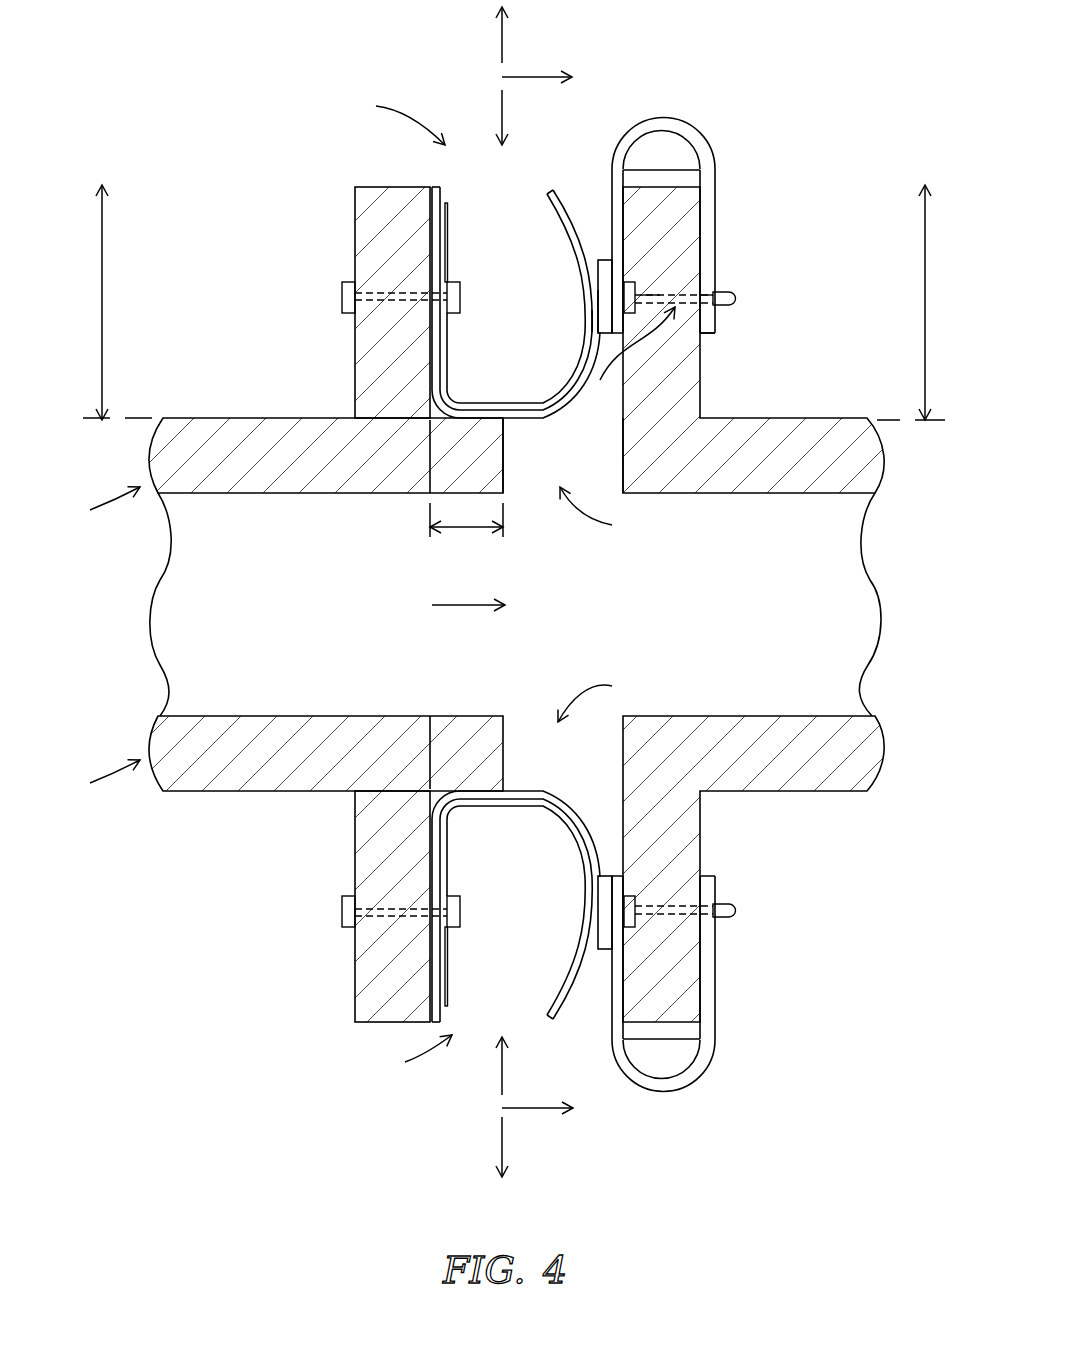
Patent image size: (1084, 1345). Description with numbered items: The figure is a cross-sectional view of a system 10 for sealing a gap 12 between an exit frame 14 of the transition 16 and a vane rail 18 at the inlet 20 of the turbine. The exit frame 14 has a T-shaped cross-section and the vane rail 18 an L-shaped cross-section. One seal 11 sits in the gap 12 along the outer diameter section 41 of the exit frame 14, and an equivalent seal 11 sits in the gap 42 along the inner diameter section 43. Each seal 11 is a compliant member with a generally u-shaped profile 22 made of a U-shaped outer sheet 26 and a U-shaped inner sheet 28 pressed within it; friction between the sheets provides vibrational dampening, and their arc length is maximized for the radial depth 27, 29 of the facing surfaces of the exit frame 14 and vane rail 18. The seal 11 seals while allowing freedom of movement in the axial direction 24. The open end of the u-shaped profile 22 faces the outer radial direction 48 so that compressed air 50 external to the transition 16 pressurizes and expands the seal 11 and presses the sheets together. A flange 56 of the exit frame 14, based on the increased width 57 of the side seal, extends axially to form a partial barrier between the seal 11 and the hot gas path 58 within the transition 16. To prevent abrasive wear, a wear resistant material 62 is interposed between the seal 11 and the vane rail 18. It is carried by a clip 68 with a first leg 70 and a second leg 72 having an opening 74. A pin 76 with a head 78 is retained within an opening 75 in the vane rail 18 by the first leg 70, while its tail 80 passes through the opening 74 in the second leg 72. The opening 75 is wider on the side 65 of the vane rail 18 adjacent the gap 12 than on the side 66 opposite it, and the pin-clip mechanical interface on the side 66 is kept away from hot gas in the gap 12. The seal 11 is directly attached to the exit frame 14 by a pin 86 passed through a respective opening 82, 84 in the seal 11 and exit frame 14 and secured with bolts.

The system 10 is at (396, 588).
The seal 11 is at (477, 340).
The gap 12 is at (604, 515).
The exit frame 14 is at (385, 187).
The transition 16 is at (252, 418).
The vane rail 18 is at (705, 410).
The inlet 20 is at (828, 600).
The u-shaped profile 22 is at (467, 398).
The axial direction 24 is at (528, 77).
The outer sheet 26 is at (432, 187).
The radial depth 27 is at (102, 312).
The inner sheet 28 is at (447, 203).
The radial depth 29 is at (925, 305).
The outer diameter section 41 is at (98, 508).
The gap 42 is at (603, 695).
The inner diameter section 43 is at (98, 780).
The outer radial direction 48 is at (502, 45).
The compressed air 50 is at (502, 108).
The flange 56 is at (480, 455).
The increased width 57 is at (468, 527).
The hot gas path 58 is at (470, 612).
The wear resistant material 62 is at (595, 200).
The side 65 is at (623, 435).
The side 66 is at (702, 350).
The clip 68 is at (667, 108).
The first leg 70 is at (630, 326).
The second leg 72 is at (708, 318).
The opening 74 is at (707, 293).
The opening 75 is at (653, 293).
The pin 76 is at (627, 361).
The head 78 is at (630, 295).
The tail 80 is at (737, 294).
The opening 82 is at (447, 298).
The opening 84 is at (383, 292).
The pin 86 is at (383, 298).